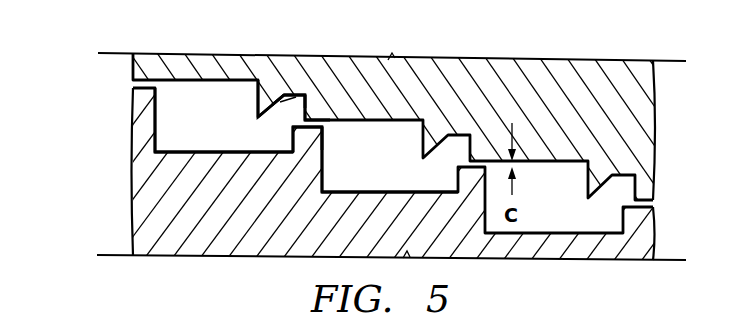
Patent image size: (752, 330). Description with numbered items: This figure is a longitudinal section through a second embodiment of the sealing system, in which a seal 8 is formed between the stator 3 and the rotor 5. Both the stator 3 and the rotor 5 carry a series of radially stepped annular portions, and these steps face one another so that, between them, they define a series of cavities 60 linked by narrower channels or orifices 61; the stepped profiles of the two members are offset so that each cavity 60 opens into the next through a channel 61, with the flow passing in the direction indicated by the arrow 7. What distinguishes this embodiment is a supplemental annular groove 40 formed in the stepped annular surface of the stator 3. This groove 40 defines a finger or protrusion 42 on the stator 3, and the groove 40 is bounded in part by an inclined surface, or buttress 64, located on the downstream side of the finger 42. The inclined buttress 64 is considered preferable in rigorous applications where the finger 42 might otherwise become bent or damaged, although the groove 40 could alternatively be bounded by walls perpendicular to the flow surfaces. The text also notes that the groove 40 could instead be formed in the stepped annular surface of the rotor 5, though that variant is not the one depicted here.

The stator 3 is at (148, 62).
The rotor 5 is at (132, 197).
The direction arrow 7 is at (112, 81).
The seal 8 is at (68, 237).
The finger 42 is at (263, 95).
The buttress 64 is at (298, 94).
The annular groove 40 is at (308, 106).
The channel 61 is at (322, 124).
The cavity 60 is at (220, 144).